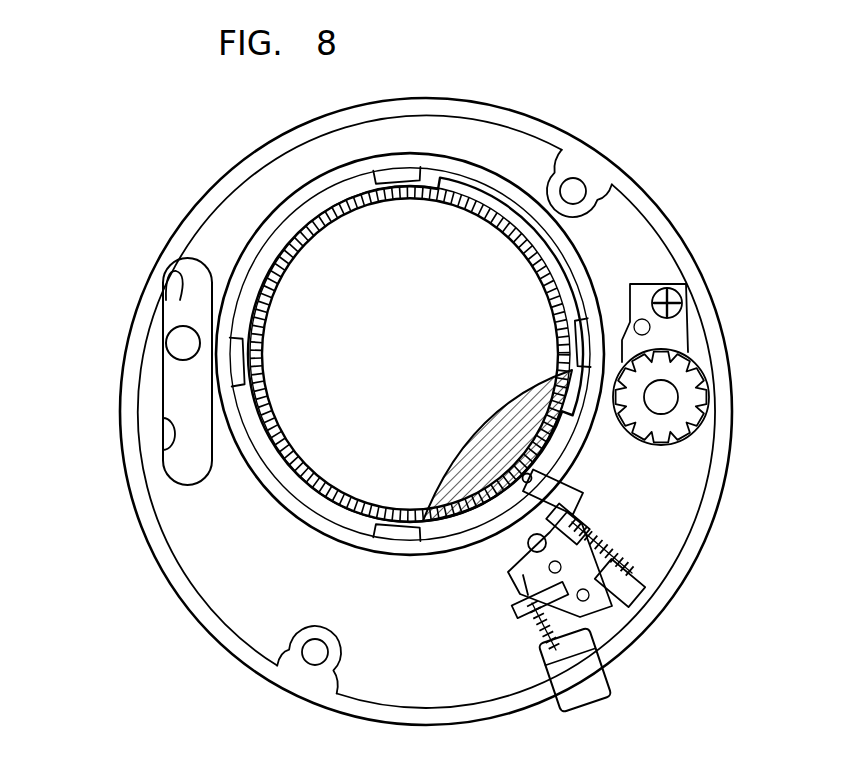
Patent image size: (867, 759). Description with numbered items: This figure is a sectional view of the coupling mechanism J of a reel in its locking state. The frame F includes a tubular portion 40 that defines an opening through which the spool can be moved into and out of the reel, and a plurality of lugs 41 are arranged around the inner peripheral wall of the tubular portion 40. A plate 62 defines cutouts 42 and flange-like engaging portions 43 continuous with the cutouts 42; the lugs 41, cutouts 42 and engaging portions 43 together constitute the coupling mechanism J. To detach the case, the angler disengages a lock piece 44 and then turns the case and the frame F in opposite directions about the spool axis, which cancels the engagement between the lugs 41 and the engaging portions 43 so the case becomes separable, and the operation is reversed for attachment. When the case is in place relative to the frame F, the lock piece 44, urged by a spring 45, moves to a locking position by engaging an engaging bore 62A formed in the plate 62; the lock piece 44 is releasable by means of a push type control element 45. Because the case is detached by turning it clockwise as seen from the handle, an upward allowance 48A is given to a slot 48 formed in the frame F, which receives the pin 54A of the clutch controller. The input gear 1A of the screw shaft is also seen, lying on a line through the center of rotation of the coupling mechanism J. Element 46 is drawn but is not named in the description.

The frame F is at (543, 132).
The input gear 1A is at (685, 400).
The tubular portion 40 is at (340, 545).
The lugs 41 is at (400, 172).
The cutouts 42 is at (342, 195).
The engaging portions 43 is at (433, 190).
The lock piece 44 is at (585, 488).
The spring 45 is at (600, 540).
The cylinder 46 is at (600, 690).
The slot 48 is at (172, 440).
The upward allowance 48A is at (176, 296).
The pin 54A is at (183, 347).
The plate 62 is at (500, 412).
The engaging bore 62A is at (520, 480).
The coupling mechanism J is at (282, 517).